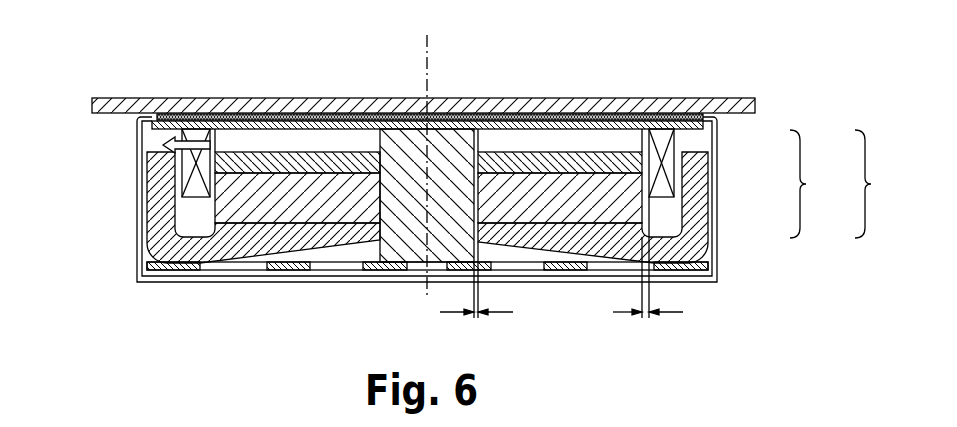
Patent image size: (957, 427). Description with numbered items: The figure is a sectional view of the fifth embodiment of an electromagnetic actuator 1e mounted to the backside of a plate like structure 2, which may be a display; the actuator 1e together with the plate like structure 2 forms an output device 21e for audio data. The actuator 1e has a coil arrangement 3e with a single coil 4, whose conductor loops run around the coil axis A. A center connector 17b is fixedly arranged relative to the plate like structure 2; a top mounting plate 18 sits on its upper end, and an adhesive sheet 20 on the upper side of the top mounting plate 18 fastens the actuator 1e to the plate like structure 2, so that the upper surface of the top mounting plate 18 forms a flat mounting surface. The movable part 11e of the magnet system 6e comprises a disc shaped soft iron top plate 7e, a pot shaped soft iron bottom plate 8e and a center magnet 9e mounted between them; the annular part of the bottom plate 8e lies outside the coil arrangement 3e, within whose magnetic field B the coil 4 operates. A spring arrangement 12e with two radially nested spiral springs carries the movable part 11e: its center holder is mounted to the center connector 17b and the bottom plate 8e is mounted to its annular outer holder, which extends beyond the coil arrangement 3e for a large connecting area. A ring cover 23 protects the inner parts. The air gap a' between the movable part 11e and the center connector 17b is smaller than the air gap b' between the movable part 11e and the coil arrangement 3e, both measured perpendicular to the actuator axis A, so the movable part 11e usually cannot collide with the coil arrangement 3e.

The electromagnetic actuator 1e is at (712, 311).
The plate like structure 2 is at (192, 100).
The coil arrangement 3e is at (72, 140).
The coil 4 is at (188, 165).
The magnet system 6e is at (882, 184).
The top plate 7e is at (628, 158).
The bottom plate 8e is at (692, 243).
The center magnet 9e is at (632, 213).
The movable part of the magnet system 11e is at (823, 184).
The spring arrangement 12e is at (245, 267).
The center connector 17b is at (463, 128).
The top mounting plate 18 is at (575, 125).
The adhesive sheet 20 is at (177, 117).
The output device 21e is at (730, 55).
The ring cover 23 is at (135, 227).
The coil axis A is at (411, 162).
The magnetic field B is at (209, 157).
The air gap between the movable part of the magnet system and the center connector a' is at (482, 280).
The air gap between the movable part of the magnet system and the annular coil arran b' is at (640, 257).